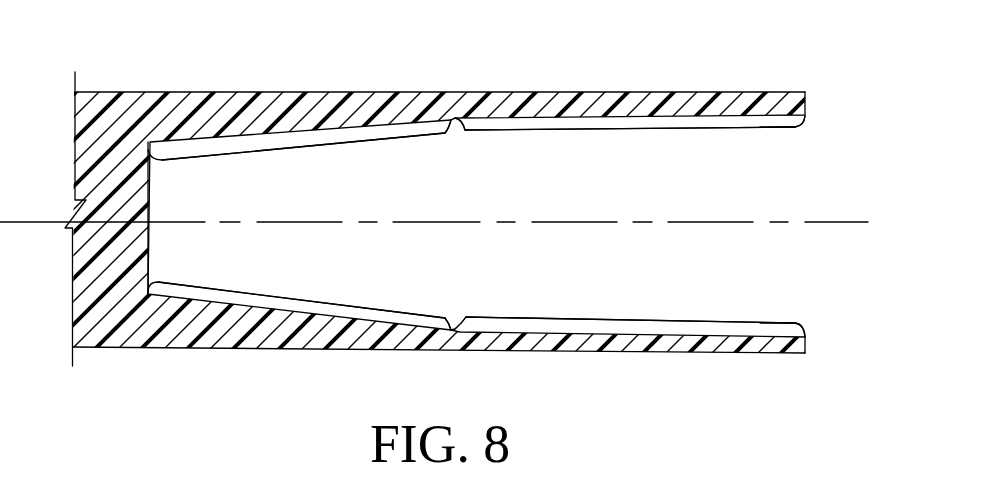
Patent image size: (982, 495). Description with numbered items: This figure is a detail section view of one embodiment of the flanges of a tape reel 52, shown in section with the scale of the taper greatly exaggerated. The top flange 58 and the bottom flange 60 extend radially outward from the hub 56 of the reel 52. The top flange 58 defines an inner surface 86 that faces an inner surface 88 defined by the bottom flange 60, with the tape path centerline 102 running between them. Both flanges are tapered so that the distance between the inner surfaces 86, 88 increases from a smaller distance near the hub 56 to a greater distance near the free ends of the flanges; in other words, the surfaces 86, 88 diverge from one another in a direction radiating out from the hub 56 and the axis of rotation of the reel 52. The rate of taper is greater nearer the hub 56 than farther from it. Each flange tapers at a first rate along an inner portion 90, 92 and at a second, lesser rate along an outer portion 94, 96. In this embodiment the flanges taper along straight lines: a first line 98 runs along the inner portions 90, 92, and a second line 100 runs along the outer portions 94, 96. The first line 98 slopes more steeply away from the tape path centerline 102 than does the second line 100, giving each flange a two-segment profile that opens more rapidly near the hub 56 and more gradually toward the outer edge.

The reel 52 is at (195, 92).
The hub 56 is at (148, 255).
The top flange 58 is at (612, 105).
The bottom flange 60 is at (594, 343).
The inner surface 86 is at (764, 141).
The inner surface 88 is at (764, 313).
The inner portion 90 is at (307, 146).
The inner portion 92 is at (307, 300).
The outer portion 94 is at (637, 128).
The outer portion 96 is at (636, 320).
The first line 98 is at (352, 128).
The second line 100 is at (693, 118).
The tape path centerline 102 is at (570, 222).